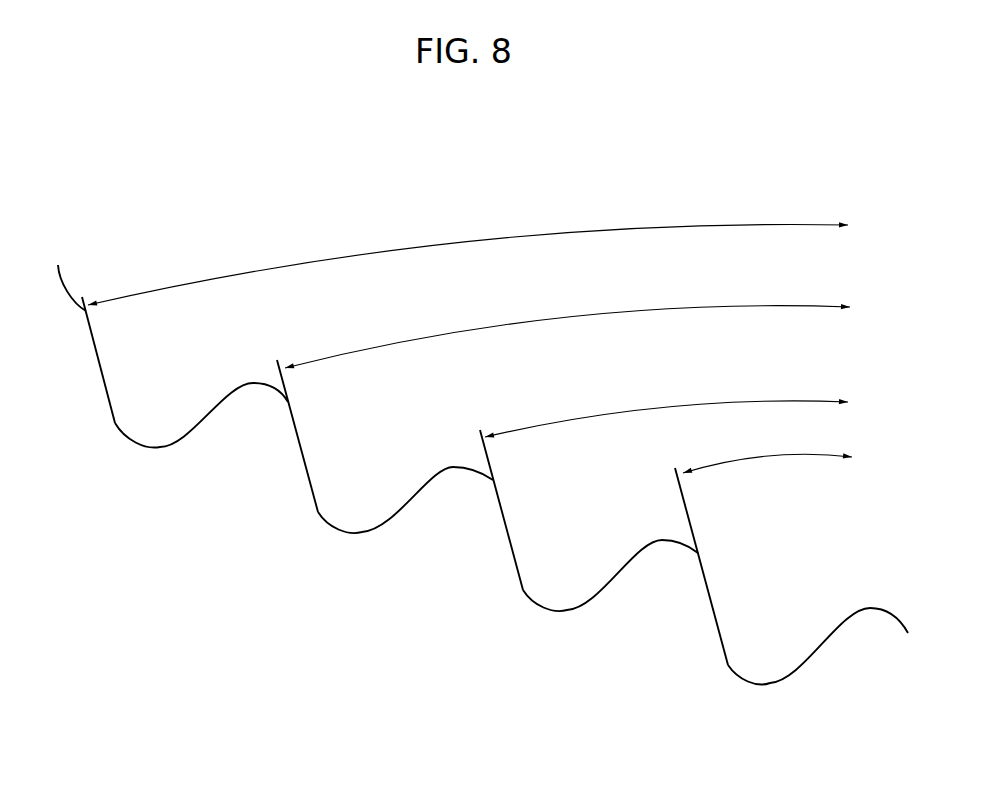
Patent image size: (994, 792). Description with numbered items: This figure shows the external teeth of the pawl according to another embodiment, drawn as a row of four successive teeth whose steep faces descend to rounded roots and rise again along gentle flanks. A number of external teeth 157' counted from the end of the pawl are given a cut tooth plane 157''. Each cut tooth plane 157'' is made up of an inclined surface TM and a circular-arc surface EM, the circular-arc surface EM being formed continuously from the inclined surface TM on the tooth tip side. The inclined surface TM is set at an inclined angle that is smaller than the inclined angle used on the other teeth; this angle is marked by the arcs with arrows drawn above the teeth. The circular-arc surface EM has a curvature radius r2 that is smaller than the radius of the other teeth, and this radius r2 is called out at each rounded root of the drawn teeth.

The curvature radius r2 is at (137, 412).
The external teeth 157' is at (427, 513).
The cut tooth plane 157'' is at (294, 490).
The circular-arc surface EM is at (322, 522).
The inclined surface TM is at (298, 448).